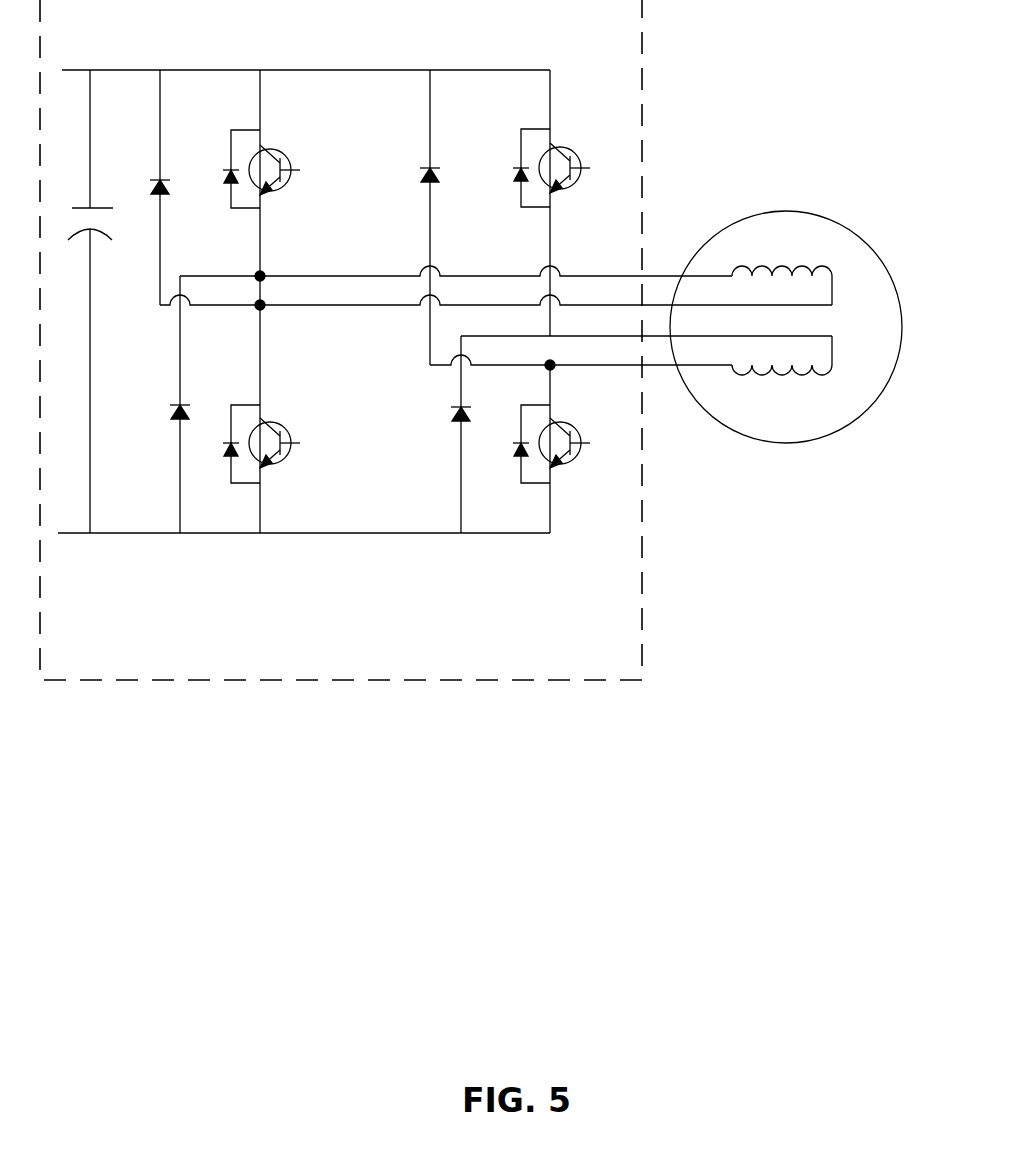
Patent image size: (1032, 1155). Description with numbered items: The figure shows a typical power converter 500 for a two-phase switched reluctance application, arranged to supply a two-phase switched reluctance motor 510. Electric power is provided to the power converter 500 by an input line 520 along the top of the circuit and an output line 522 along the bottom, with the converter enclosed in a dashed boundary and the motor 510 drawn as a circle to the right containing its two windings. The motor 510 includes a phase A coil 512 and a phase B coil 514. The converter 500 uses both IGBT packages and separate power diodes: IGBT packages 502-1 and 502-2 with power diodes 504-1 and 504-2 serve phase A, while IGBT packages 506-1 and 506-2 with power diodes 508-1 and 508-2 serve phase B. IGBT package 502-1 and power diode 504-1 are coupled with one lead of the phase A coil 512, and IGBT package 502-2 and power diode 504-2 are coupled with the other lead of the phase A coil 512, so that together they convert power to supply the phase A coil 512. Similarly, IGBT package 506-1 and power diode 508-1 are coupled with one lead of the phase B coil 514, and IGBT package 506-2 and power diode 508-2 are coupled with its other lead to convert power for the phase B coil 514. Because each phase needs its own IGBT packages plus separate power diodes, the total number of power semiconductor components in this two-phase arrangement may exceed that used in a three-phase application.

The power converter 500 is at (567, 32).
The IGBT package 502-1 is at (247, 153).
The IGBT package 502-2 is at (248, 420).
The power diode 504-1 is at (157, 186).
The power diode 504-2 is at (178, 412).
The IGBT package 506-1 is at (540, 148).
The IGBT package 506-2 is at (540, 426).
The power diode 508-1 is at (428, 177).
The power diode 508-2 is at (458, 417).
The 2-phase switched reluctance motor 510 is at (810, 260).
The phase A coil 512 is at (832, 287).
The phase B coil 514 is at (820, 355).
The input line 520 is at (70, 70).
The output line 522 is at (78, 533).